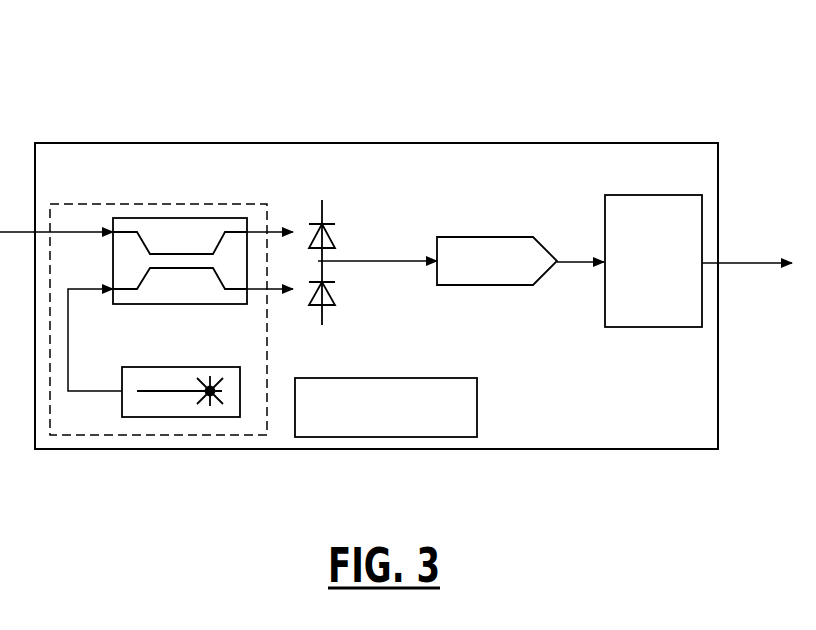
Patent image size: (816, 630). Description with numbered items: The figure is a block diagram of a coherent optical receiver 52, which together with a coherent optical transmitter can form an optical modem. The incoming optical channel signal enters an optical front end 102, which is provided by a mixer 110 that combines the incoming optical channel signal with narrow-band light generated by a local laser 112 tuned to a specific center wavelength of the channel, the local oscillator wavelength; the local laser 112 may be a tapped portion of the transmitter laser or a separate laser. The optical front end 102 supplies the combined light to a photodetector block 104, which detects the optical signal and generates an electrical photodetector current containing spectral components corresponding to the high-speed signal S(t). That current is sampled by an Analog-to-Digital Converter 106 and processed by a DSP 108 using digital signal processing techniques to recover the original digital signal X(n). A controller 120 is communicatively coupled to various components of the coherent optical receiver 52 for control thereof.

The coherent optical receiver 52 is at (534, 68).
The optical front end 102 is at (157, 204).
The photodetector block 104 is at (324, 212).
The Analog-to-Digital Converter 106 is at (482, 237).
The DSP 108 is at (648, 327).
The mixer 110 is at (145, 304).
The local laser 112 is at (185, 367).
The controller 120 is at (402, 378).